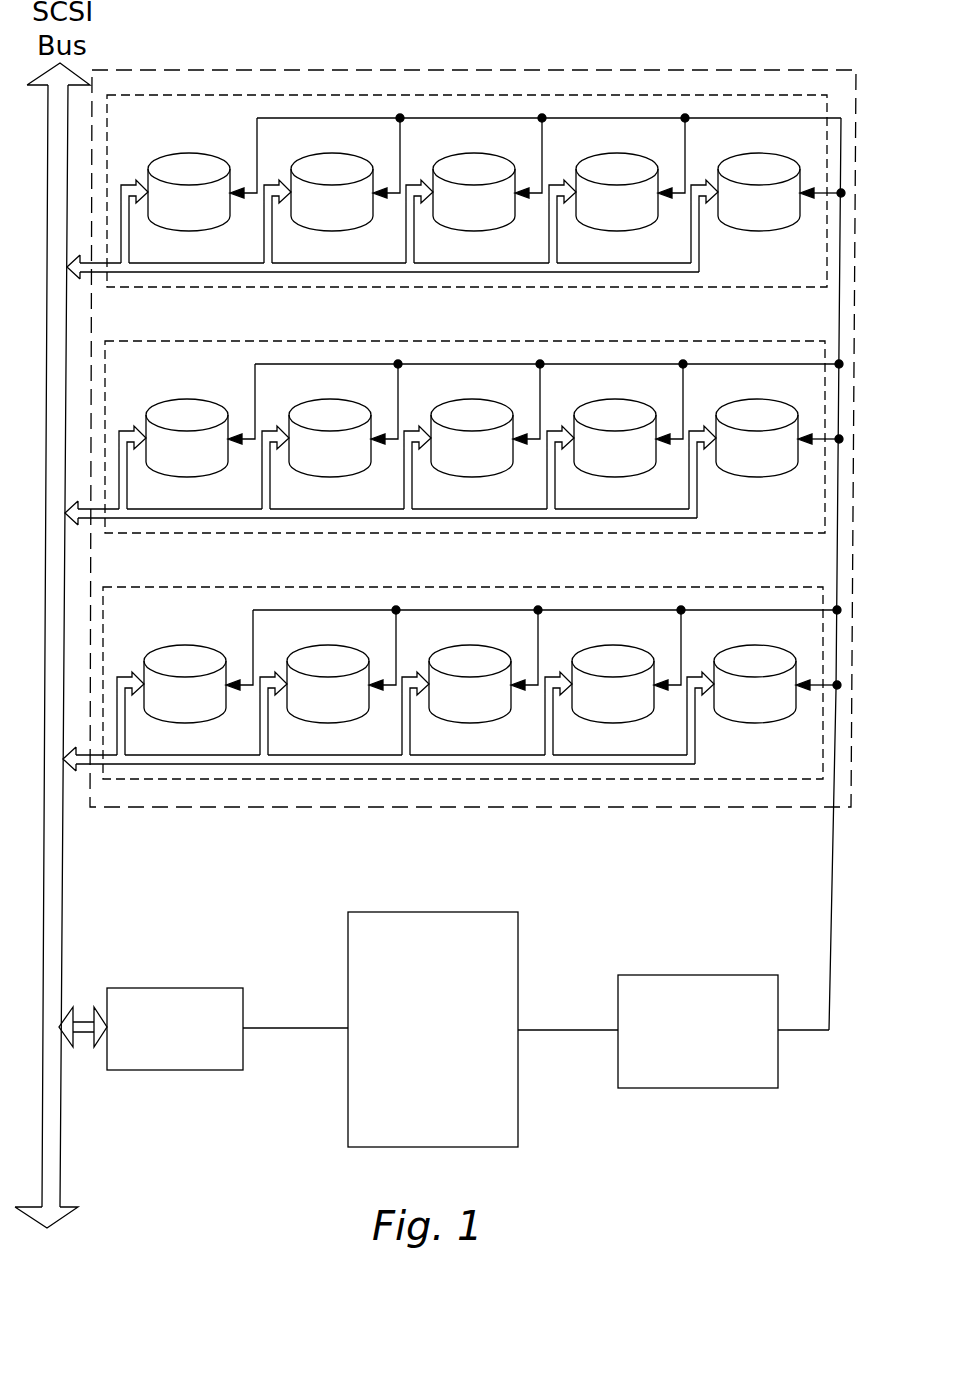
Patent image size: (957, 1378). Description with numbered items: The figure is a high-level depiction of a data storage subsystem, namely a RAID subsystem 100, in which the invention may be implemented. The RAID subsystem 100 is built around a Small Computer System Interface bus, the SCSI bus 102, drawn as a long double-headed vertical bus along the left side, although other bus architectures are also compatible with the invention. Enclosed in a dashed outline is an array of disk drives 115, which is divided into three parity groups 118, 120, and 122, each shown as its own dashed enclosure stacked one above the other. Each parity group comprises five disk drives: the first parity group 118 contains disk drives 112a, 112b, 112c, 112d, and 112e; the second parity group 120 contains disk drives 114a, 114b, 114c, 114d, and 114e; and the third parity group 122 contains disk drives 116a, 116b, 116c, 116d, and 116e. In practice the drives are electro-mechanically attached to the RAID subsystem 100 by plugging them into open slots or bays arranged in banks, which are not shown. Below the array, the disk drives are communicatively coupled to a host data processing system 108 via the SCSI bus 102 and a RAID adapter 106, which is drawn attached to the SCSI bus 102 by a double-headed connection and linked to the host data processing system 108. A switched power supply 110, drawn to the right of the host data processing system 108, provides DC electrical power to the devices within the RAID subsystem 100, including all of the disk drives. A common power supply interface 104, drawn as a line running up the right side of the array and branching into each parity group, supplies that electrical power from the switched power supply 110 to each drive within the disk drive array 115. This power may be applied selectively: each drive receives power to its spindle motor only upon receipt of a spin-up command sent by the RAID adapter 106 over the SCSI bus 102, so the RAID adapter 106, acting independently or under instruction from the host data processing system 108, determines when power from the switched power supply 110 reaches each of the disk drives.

The RAID subsystem 100 is at (468, 35).
The SCSI bus 102 is at (62, 898).
The common power supply interface 104 is at (827, 895).
The RAID adapter 106 is at (200, 988).
The host data processing system 108 is at (474, 912).
The switched power supply 110 is at (735, 975).
The array of disk drives 115 is at (773, 70).
The parity group 118 is at (166, 95).
The parity group 120 is at (454, 414).
The parity group 122 is at (452, 660).
The disk drive 112a is at (156, 217).
The disk drive 112b is at (299, 217).
The disk drive 112c is at (441, 217).
The disk drive 112d is at (584, 217).
The disk drive 112e is at (726, 217).
The disk drive 114a is at (187, 436).
The disk drive 114b is at (330, 436).
The disk drive 114c is at (472, 436).
The disk drive 114d is at (615, 436).
The disk drive 114e is at (764, 458).
The disk drive 116a is at (185, 682).
The disk drive 116b is at (328, 682).
The disk drive 116c is at (470, 682).
The disk drive 116d is at (613, 682).
The disk drive 116e is at (762, 704).